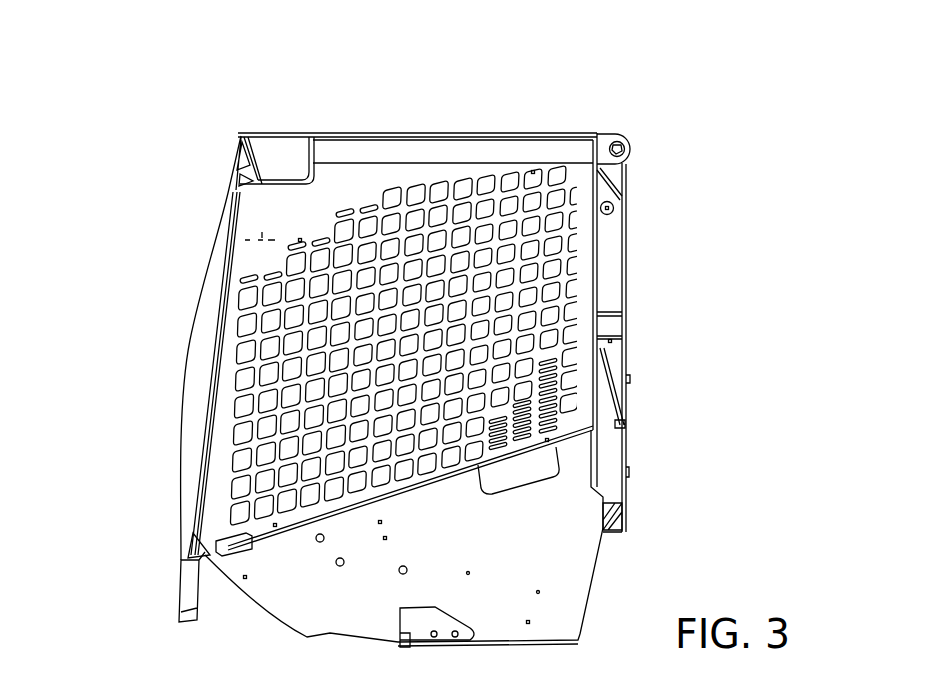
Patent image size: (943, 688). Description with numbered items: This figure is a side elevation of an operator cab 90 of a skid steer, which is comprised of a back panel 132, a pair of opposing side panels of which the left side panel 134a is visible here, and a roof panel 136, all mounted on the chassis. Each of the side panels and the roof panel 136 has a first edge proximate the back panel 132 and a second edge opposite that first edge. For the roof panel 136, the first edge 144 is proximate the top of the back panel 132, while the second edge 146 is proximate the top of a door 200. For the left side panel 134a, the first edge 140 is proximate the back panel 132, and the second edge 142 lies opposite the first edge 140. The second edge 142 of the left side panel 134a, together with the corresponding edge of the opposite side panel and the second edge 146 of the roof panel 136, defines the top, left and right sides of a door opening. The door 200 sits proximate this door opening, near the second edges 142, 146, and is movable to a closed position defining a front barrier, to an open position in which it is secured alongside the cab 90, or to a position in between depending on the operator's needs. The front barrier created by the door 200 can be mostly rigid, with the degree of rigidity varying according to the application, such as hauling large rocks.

The cab 90 is at (619, 72).
The back panel 132 is at (626, 250).
The left side panel 134a is at (400, 178).
The roof panel 136 is at (528, 134).
The first edge 140 is at (598, 283).
The second edge 142 is at (218, 330).
The first edge 144 is at (596, 134).
The second edge 146 is at (243, 134).
The door 200 is at (206, 250).